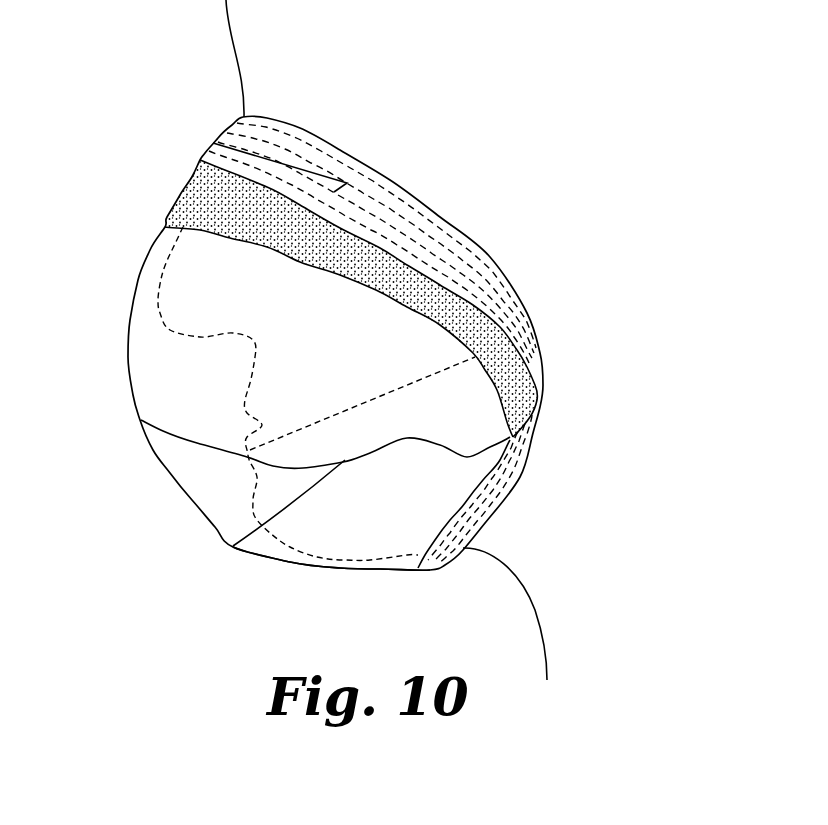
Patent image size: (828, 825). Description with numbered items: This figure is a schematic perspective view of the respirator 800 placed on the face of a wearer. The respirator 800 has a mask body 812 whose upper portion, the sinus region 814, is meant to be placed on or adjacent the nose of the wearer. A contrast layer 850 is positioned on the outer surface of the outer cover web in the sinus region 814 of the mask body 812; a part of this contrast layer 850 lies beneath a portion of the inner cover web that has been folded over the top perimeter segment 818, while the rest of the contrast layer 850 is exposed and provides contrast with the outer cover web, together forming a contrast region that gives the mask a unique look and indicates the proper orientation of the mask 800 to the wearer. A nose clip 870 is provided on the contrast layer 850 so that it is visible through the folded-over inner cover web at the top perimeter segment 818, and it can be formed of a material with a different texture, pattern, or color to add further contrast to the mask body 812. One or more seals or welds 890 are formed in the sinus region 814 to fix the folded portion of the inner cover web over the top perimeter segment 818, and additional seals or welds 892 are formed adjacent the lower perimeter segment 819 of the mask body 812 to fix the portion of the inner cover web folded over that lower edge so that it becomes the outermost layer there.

The respirator 800 is at (393, 135).
The mask body 812 is at (545, 292).
The sinus region 814 is at (160, 156).
The top perimeter segment 818 is at (340, 150).
The lower perimeter segment 819 is at (365, 572).
The contrast layer 850 is at (521, 402).
The nose clip 870 is at (266, 149).
The seals or welds 890 is at (432, 210).
The seals or welds 892 is at (474, 512).